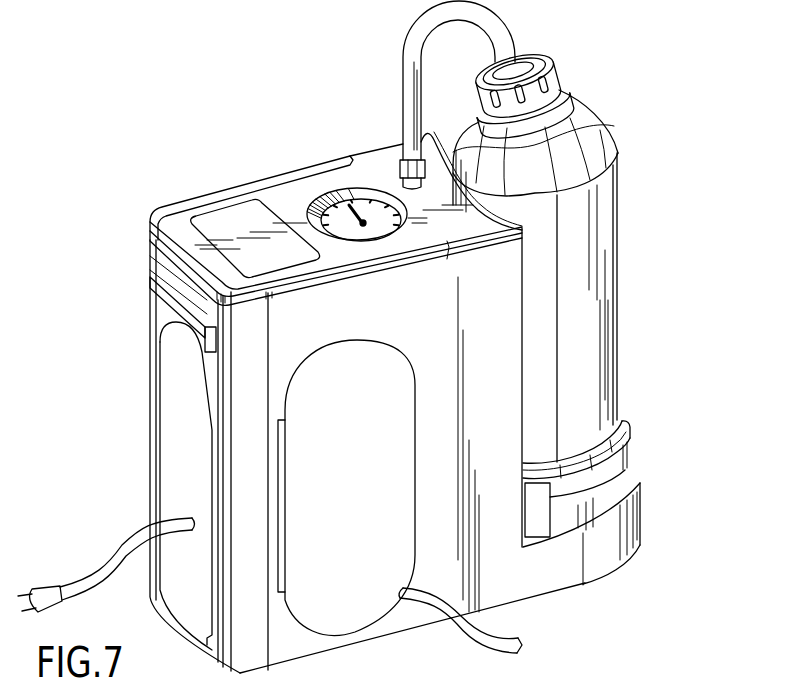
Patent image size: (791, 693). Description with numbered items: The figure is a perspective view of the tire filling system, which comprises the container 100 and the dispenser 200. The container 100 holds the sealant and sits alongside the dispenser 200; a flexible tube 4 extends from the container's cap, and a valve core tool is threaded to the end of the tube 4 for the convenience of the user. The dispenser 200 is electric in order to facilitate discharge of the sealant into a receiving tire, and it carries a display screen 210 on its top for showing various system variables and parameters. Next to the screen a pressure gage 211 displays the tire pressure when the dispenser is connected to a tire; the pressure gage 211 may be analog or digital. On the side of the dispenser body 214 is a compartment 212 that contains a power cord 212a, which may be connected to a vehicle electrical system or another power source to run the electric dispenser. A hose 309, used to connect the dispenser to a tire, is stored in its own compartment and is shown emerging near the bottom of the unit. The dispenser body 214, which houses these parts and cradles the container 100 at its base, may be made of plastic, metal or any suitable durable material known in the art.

The dispenser 200 is at (224, 146).
The top control panel 210 is at (228, 232).
The pressure gage 211 is at (340, 215).
The flexible tube 4 is at (403, 63).
The container 100 is at (611, 106).
The compartment 212 is at (192, 408).
The power cord 212a is at (117, 562).
The dispenser body 214 is at (538, 577).
The hose 309 is at (476, 644).